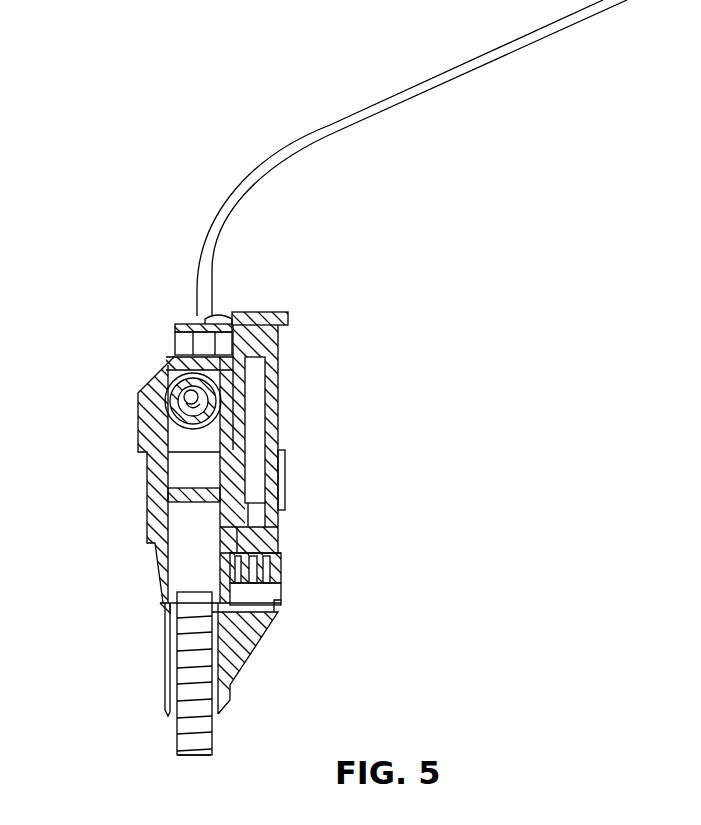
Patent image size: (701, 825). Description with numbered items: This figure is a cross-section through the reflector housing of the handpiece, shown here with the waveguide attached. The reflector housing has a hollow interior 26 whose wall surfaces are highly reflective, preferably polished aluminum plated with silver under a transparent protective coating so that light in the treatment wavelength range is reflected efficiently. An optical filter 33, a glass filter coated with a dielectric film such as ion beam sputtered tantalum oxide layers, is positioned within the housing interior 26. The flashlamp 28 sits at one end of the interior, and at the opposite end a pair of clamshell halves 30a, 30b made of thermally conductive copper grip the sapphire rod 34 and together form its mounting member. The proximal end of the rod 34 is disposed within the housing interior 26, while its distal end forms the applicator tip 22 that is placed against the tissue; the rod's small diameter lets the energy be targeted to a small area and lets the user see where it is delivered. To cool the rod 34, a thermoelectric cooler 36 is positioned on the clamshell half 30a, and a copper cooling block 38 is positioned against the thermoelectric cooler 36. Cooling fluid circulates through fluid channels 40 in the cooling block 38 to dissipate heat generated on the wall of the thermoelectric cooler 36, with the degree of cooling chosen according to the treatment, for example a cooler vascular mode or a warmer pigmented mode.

The applicator tip 22 is at (200, 757).
The hollow interior 26 is at (185, 560).
The flashlamp 28 is at (163, 393).
The clamshell half 30a is at (260, 633).
The clamshell half 30b is at (163, 687).
The optical filter 33 is at (168, 494).
The sapphire rod 34 is at (212, 727).
The thermoelectric cooler 36 is at (268, 596).
The copper cooling block 38 is at (270, 568).
The fluid channels 40 is at (268, 556).